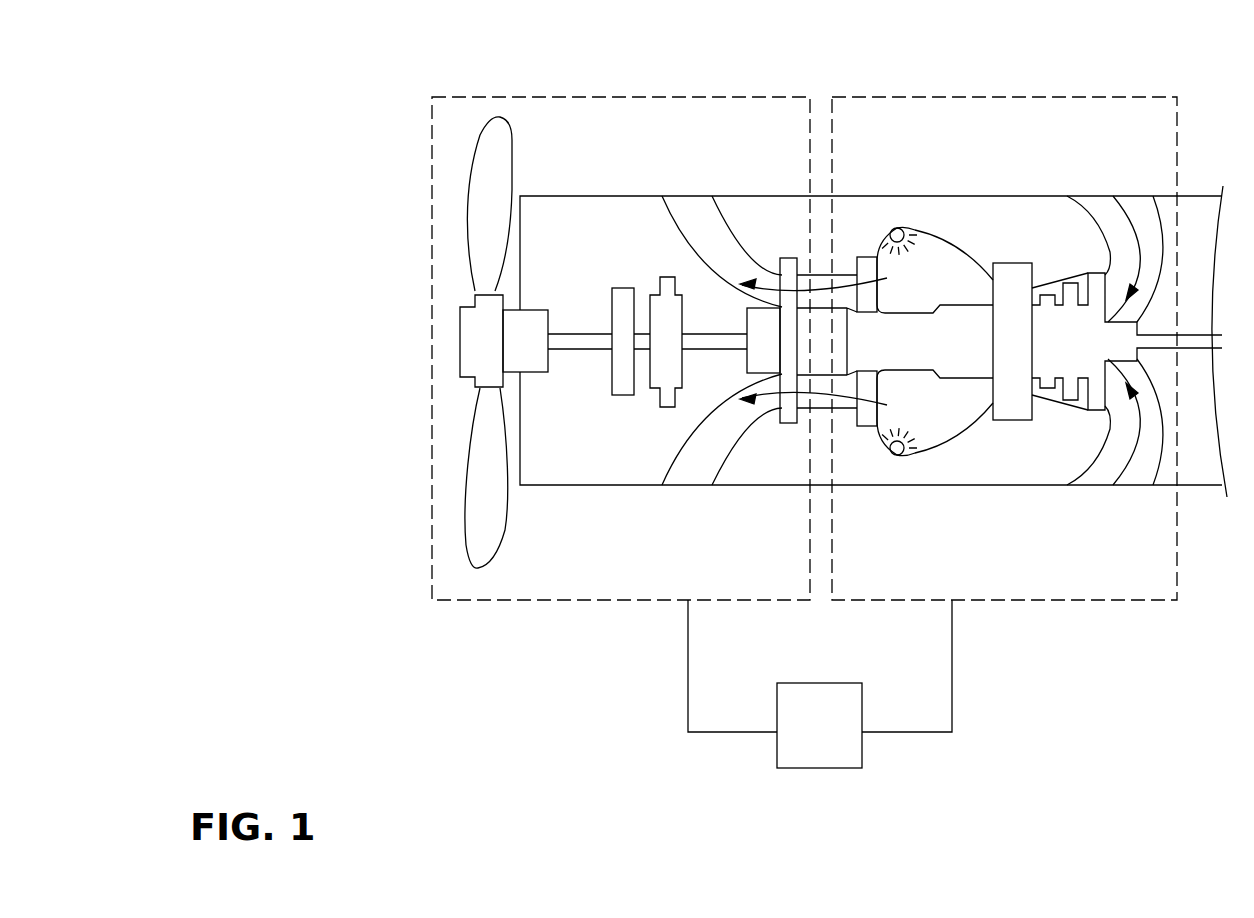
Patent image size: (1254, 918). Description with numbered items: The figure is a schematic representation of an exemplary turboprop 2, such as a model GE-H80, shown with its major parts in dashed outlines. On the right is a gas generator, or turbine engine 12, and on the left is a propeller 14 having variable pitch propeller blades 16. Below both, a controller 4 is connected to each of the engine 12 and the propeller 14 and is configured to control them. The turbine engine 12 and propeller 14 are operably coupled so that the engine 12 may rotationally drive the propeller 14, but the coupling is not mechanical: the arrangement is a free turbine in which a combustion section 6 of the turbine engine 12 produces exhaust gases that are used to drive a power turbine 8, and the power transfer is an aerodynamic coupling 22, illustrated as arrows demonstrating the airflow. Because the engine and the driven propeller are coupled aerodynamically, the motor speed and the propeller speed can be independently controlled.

The turboprop 2 is at (647, 40).
The controller 4 is at (829, 737).
The combustion section 6 is at (930, 300).
The power turbine 8 is at (788, 422).
The turbine engine 12 is at (1033, 606).
The propeller 14 is at (498, 604).
The variable pitch propeller blades 16 is at (478, 213).
The aerodynamic coupling 22 is at (822, 295).